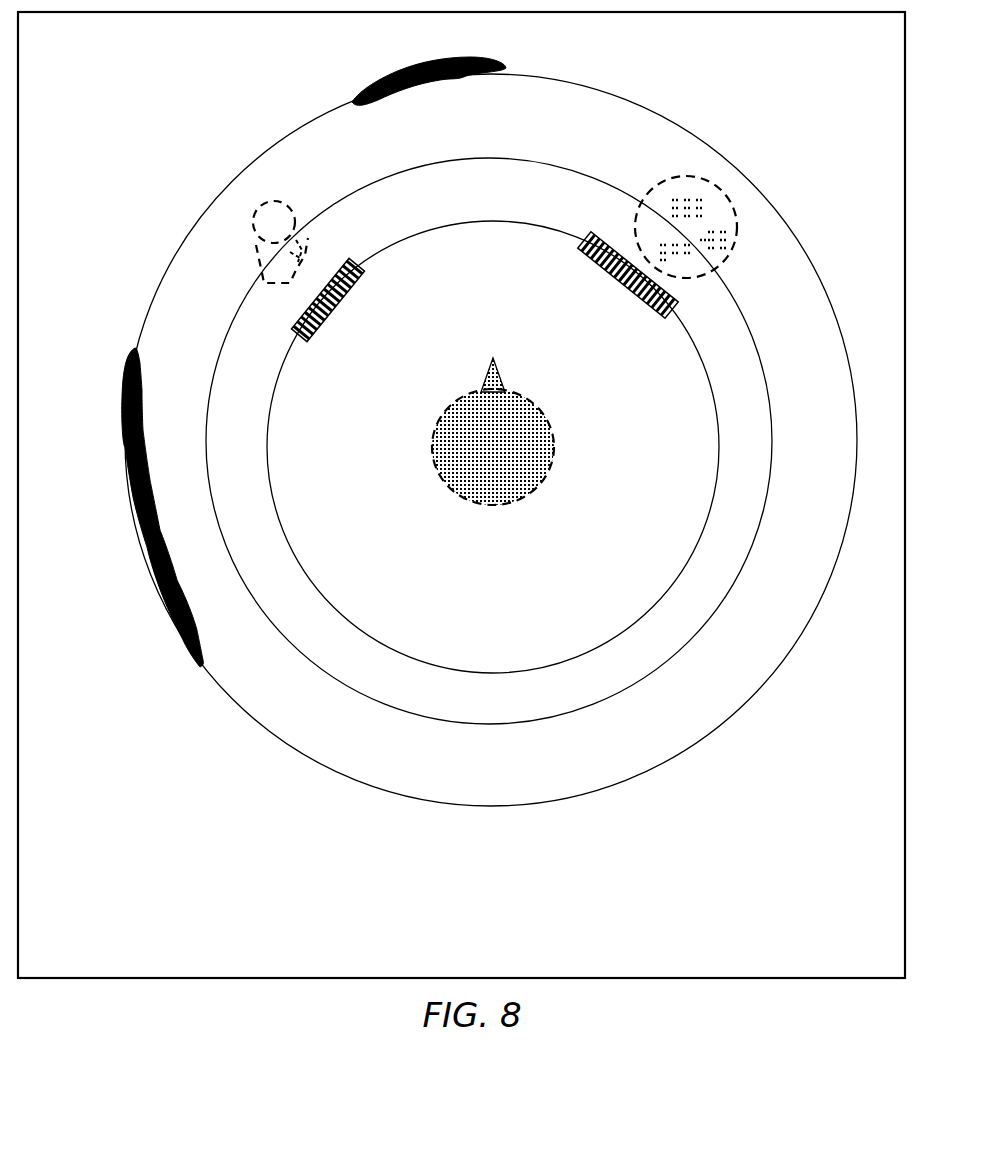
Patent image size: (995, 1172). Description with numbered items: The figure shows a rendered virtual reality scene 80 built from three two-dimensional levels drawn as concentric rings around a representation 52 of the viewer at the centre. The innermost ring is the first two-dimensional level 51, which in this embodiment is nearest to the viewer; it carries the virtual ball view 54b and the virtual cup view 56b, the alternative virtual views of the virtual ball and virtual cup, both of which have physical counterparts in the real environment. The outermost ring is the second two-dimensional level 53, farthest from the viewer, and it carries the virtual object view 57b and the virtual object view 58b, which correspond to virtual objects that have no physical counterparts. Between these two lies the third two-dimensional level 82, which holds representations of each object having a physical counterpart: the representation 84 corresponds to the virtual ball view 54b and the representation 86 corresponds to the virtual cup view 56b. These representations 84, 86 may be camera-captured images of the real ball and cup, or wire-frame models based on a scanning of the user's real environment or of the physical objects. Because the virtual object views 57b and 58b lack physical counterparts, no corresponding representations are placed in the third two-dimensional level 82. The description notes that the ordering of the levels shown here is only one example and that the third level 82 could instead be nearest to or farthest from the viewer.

The first two-dimensional level 51 is at (565, 660).
The representation of viewer 52 is at (515, 497).
The second two-dimensional level 53 is at (665, 752).
The virtual ball view 54b is at (618, 282).
The virtual cup view 56b is at (320, 317).
The virtual object view 57b is at (435, 78).
The virtual object view 58b is at (155, 588).
The virtual reality scene 80 is at (760, 867).
The third two-dimensional level 82 is at (518, 718).
The representation of ball 84 is at (722, 198).
The representation of cup 86 is at (257, 233).